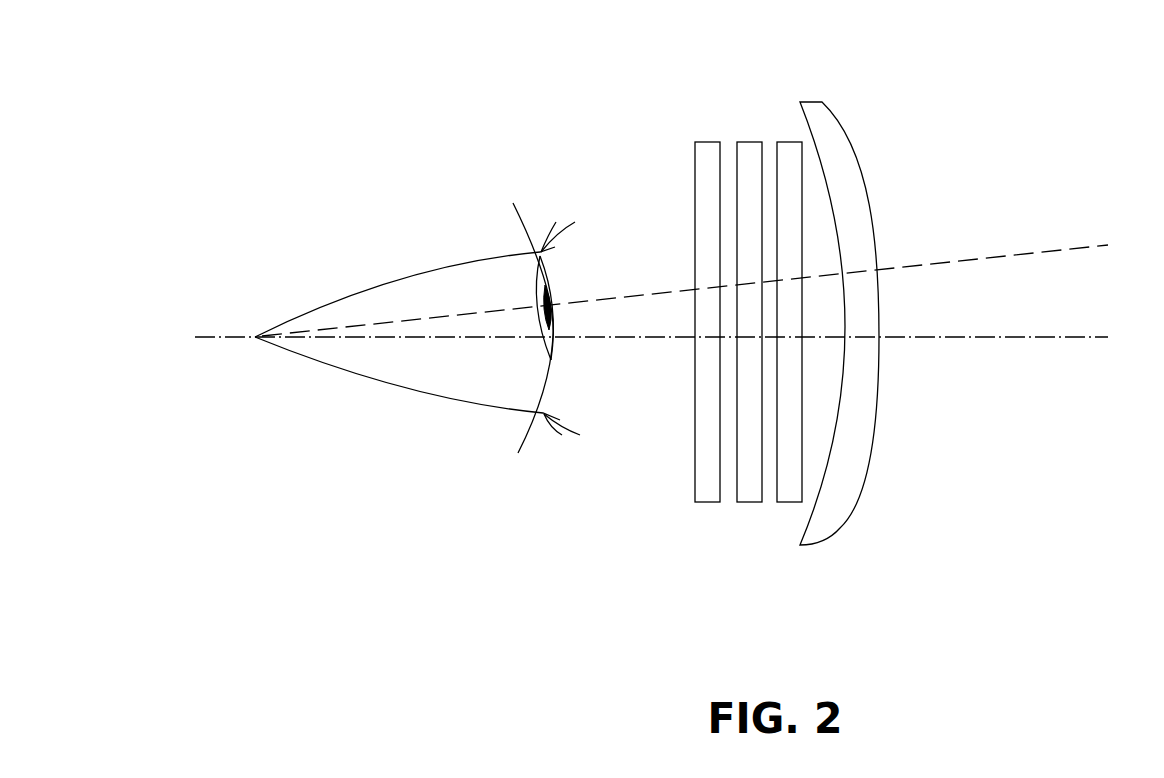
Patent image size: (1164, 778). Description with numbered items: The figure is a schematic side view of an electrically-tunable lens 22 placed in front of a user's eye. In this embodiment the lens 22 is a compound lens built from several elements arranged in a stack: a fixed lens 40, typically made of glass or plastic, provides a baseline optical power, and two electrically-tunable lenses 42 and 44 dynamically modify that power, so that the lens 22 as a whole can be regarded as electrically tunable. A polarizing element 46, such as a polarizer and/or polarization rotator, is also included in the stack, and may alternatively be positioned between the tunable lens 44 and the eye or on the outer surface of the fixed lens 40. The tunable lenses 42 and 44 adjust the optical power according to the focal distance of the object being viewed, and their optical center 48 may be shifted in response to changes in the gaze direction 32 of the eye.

The electrically-tunable lens 22 is at (770, 327).
The gaze direction 32 is at (1040, 252).
The fixed lens 40 is at (820, 102).
The electrically-tunable lens 42 is at (745, 142).
The electrically-tunable lens 44 is at (701, 142).
The polarizing element 46 is at (793, 142).
The optical center 48 is at (1008, 337).